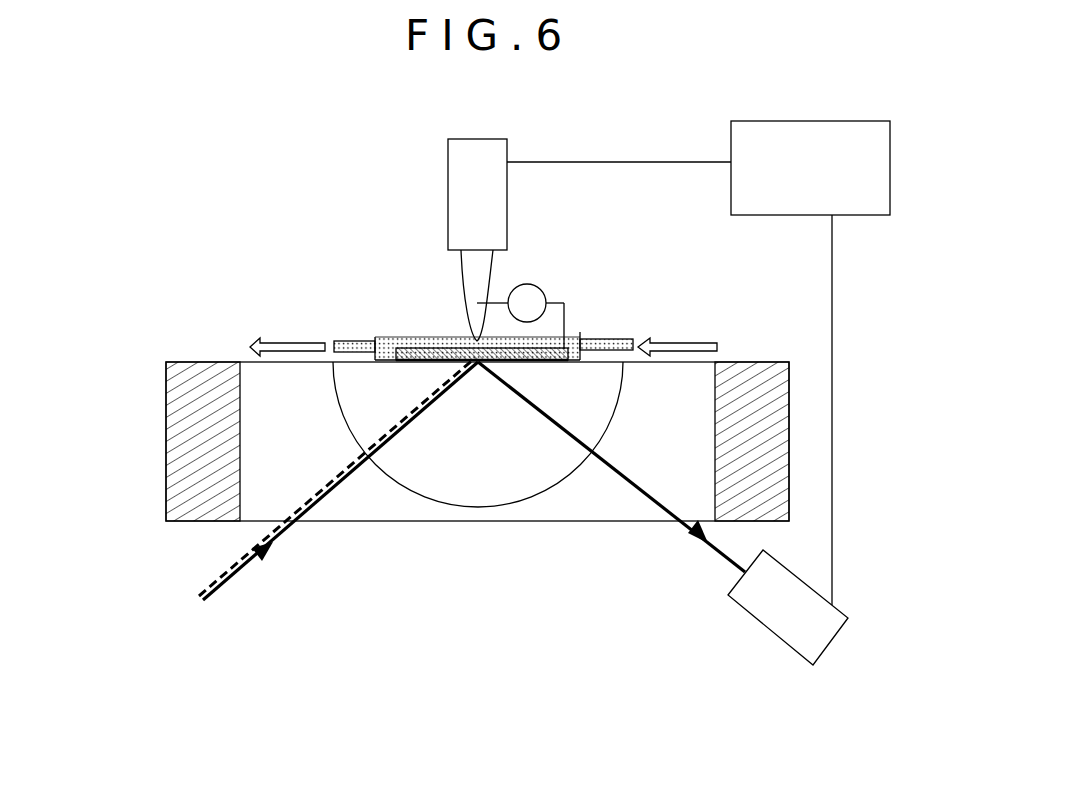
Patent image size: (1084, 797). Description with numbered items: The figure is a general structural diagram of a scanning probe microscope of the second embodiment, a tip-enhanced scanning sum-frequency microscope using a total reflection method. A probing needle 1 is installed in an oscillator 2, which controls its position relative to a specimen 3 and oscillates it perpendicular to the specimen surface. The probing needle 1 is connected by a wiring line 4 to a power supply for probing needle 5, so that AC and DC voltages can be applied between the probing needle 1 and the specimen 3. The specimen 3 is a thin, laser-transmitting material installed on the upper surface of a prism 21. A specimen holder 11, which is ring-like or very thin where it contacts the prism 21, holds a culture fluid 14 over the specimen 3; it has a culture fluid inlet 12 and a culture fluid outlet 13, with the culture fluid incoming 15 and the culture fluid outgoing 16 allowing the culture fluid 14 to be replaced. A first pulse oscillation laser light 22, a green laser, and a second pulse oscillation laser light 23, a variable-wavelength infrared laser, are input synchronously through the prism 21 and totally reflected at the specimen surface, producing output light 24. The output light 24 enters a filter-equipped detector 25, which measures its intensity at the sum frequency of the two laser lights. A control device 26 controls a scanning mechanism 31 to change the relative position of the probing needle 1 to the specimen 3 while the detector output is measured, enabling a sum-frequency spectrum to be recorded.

The probing needle 1 is at (485, 280).
The oscillator 2 is at (458, 190).
The specimen 3 is at (420, 348).
The wiring line 4 is at (566, 317).
The power supply for probing needle 5 is at (543, 287).
The specimen holder 11 is at (378, 337).
The culture fluid inlet 12 is at (628, 338).
The culture fluid outlet 13 is at (348, 342).
The culture fluid 14 is at (450, 342).
The culture fluid incoming 15 is at (708, 340).
The culture fluid outgoing 16 is at (295, 347).
The prism 21 is at (475, 483).
The first pulse oscillation laser light 22 is at (317, 510).
The second pulse oscillation laser light 23 is at (232, 580).
The output light 24 is at (717, 555).
The filter-equipped detector 25 is at (765, 613).
The control device 26 is at (855, 217).
The scanning mechanism 31 is at (140, 362).